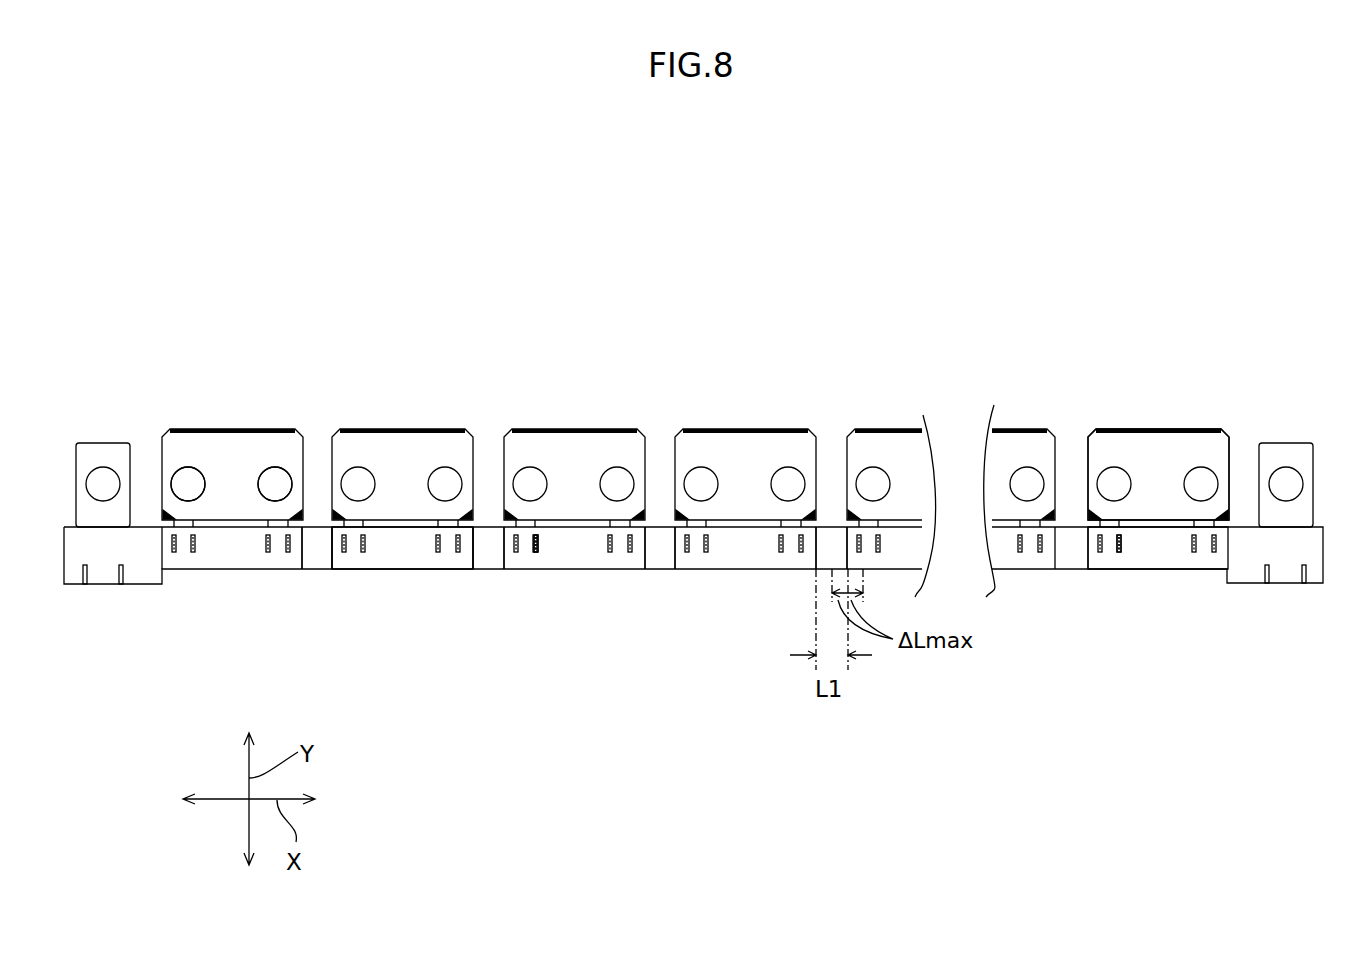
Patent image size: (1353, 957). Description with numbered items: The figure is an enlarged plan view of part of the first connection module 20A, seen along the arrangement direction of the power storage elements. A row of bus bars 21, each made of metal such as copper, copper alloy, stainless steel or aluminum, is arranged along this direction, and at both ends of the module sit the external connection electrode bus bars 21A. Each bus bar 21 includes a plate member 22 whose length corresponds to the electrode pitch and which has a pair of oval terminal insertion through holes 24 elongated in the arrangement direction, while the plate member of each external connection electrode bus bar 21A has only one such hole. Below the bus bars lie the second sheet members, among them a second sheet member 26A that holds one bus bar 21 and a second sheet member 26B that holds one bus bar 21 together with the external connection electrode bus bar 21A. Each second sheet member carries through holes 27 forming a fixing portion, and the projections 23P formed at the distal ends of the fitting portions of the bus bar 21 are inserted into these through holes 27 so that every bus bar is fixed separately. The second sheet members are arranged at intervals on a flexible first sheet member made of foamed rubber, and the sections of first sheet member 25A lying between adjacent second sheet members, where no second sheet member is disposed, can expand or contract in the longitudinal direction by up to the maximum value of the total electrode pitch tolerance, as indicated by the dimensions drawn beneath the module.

The first connection module 20A is at (795, 338).
The bus bar 21 is at (1157, 428).
The external connection electrode bus bar 21A is at (101, 443).
The plate member 22 is at (1122, 455).
The projection 23P is at (538, 552).
The terminal insertion through hole 24 is at (270, 478).
The section of first sheet member 25A is at (830, 550).
The second sheet member 26A is at (403, 553).
The second sheet member 26B is at (1152, 548).
The through hole 27 is at (533, 542).